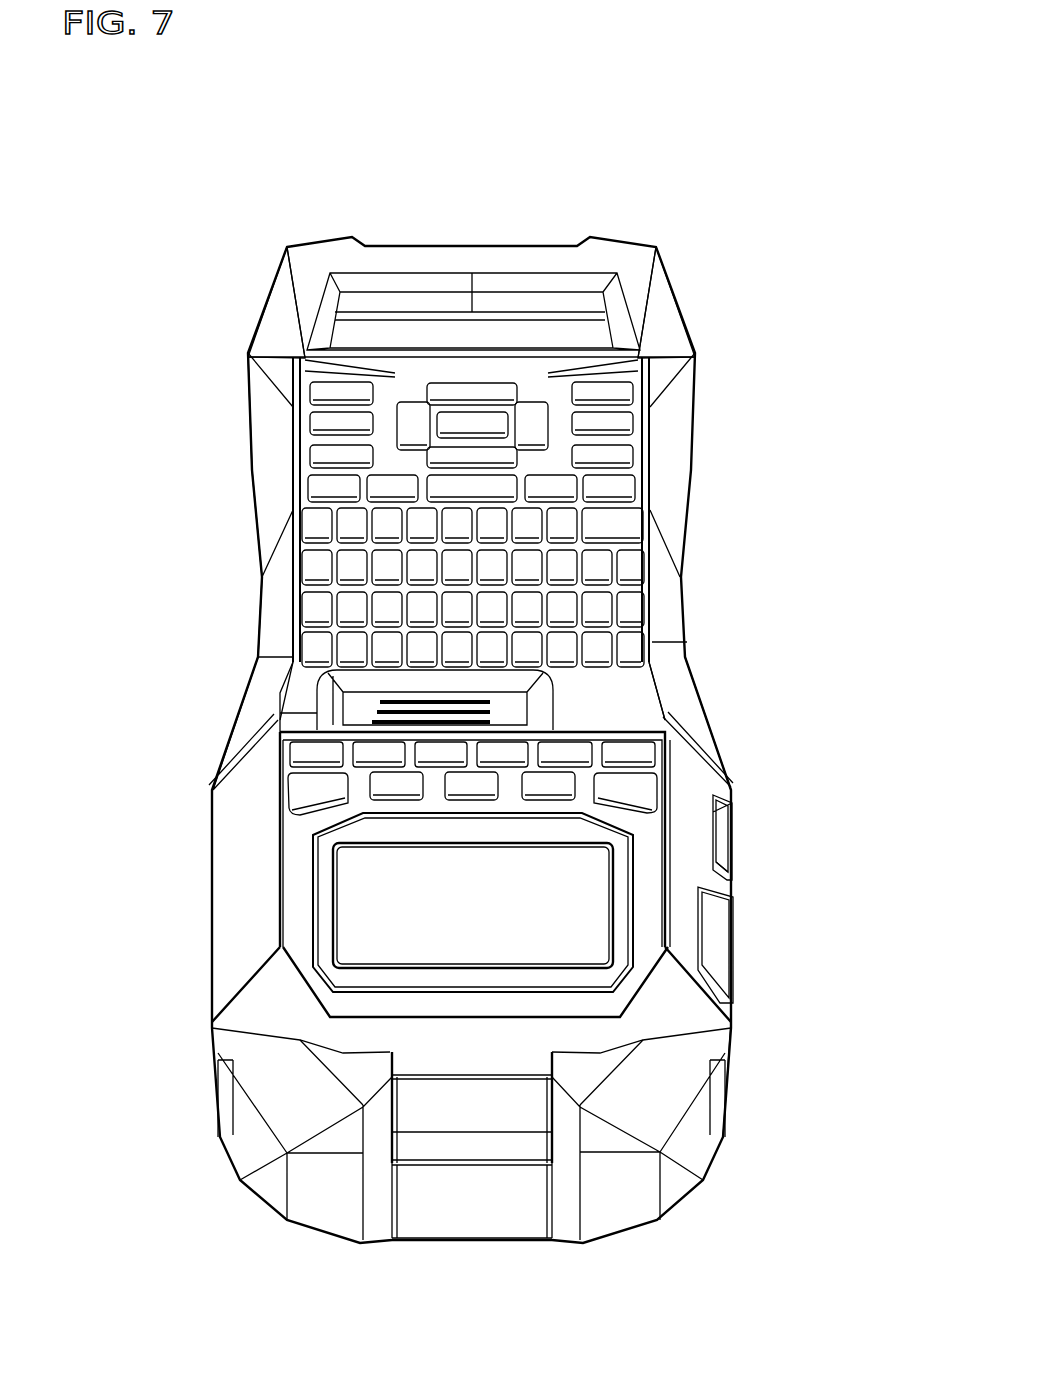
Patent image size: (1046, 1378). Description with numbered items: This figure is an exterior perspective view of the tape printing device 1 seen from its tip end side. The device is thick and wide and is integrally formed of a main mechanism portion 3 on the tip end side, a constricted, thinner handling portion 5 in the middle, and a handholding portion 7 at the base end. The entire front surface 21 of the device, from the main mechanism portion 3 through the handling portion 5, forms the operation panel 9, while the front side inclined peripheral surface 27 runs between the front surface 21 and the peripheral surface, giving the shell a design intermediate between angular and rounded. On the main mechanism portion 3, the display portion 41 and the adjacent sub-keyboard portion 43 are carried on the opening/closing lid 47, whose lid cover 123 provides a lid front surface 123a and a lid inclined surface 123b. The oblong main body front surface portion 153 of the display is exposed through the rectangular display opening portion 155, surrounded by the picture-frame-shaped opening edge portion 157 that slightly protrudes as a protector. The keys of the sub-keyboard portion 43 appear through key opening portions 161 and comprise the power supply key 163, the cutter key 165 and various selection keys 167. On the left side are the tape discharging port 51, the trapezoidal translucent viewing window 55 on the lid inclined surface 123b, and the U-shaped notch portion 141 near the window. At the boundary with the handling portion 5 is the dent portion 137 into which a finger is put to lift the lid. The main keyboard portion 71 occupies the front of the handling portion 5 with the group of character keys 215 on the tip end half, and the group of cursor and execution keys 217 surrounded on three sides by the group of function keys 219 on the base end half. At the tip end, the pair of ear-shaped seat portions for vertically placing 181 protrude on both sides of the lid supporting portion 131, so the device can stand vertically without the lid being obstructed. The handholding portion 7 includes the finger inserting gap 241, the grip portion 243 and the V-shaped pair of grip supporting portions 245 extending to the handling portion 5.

The tape printing device 1 is at (487, 118).
The main mechanism portion 3 is at (828, 976).
The handling portion 5 is at (806, 437).
The handholding portion 7 is at (760, 209).
The operation panel 9 is at (637, 697).
The front surface 21 is at (280, 682).
The front side inclined peripheral surface 27 is at (273, 595).
The display portion 41 is at (592, 953).
The sub-keyboard portion 43 is at (512, 798).
The opening/closing lid 47 is at (463, 1162).
The tape discharging port 51 is at (734, 840).
The viewing window 55 is at (718, 950).
The main keyboard portion 71 is at (655, 493).
The lid cover 123 is at (237, 826).
The lid front surface 123a is at (733, 1023).
The lid inclined surface 123b is at (688, 803).
The lid supporting portion 131 is at (533, 1143).
The dent portion 137 is at (548, 688).
The notch portion 141 is at (717, 862).
The main body front surface portion 153 is at (347, 883).
The display opening portion 155 is at (345, 930).
The opening edge portion 157 is at (372, 975).
The key opening portions 161 is at (410, 786).
The power supply key 163 is at (317, 790).
The cutter key 165 is at (627, 788).
The selection keys 167 is at (483, 783).
The seat portions for vertically placing 181 is at (323, 1212).
The group of character keys 215 is at (646, 587).
The group of cursor and execution keys 217 is at (476, 374).
The group of function keys 219 is at (305, 443).
The finger inserting gap 241 is at (418, 338).
The grip portion 243 is at (553, 244).
The grip supporting portions 245 is at (307, 283).